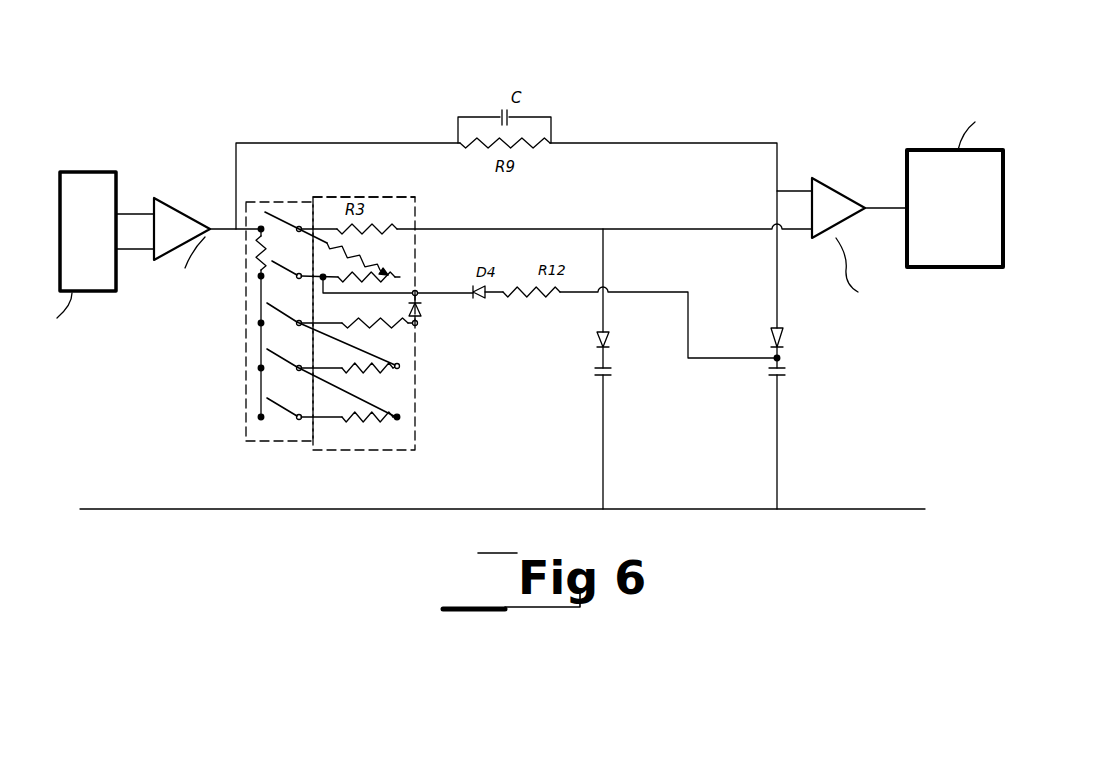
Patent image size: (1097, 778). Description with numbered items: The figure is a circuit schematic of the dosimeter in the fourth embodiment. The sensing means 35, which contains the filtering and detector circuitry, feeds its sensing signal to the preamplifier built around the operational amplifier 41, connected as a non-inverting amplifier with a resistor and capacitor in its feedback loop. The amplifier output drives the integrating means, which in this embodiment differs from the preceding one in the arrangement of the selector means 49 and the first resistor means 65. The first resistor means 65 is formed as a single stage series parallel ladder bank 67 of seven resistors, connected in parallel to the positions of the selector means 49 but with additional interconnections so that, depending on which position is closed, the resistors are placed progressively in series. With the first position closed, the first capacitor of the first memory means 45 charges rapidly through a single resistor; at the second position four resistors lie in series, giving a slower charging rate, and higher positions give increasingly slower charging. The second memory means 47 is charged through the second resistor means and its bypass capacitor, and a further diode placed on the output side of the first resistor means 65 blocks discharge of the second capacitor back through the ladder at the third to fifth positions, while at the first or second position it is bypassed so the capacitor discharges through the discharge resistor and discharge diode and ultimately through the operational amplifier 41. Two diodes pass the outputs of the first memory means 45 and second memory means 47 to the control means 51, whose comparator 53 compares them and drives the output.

The sensing means 35 is at (68, 252).
The operational amplifier 41 is at (183, 206).
The selector means 49 is at (246, 426).
The first resistor means 65 is at (416, 432).
The single stage series parallel ladder bank 67 is at (328, 192).
The first memory means 45 is at (587, 392).
The second memory means 47 is at (757, 395).
The comparator 53 is at (831, 185).
The control means 51 is at (986, 187).